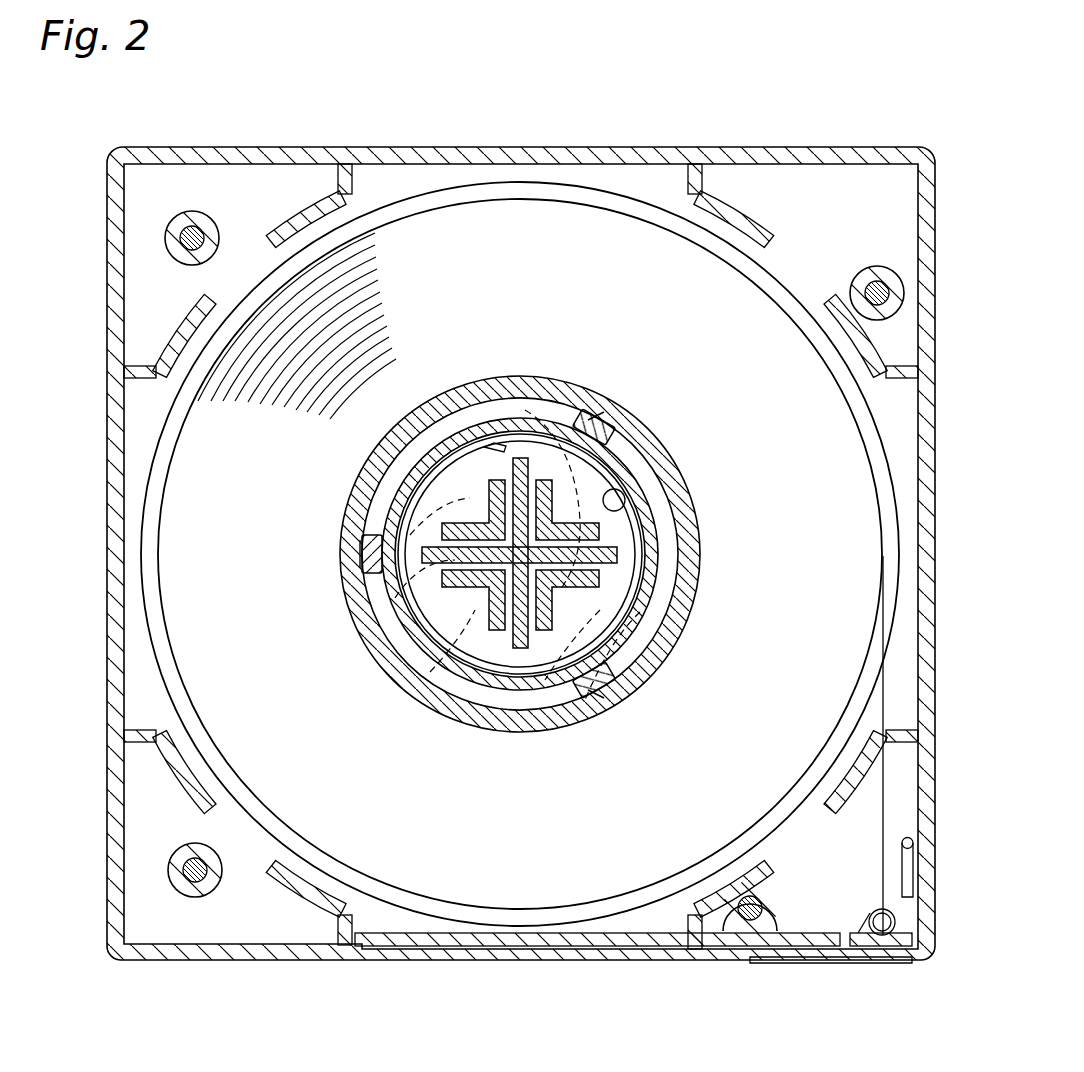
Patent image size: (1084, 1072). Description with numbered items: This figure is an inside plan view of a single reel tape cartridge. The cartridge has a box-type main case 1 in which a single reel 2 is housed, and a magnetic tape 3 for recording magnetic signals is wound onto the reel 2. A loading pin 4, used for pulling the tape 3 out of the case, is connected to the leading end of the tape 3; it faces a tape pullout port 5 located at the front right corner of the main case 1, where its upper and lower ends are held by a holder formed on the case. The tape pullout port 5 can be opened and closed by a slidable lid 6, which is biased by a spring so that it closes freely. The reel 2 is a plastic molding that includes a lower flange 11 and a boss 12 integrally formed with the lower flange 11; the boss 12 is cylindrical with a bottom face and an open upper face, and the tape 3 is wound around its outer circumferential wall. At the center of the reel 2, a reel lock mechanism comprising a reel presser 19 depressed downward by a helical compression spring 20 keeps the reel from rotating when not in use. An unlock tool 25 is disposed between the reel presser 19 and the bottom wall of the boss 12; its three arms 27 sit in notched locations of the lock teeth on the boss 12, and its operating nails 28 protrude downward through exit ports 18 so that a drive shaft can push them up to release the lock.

The main case 1 is at (757, 147).
The reel 2 is at (650, 198).
The magnetic tape 3 is at (316, 285).
The loading pin 4 is at (870, 912).
The tape pullout port 5 is at (888, 962).
The lid 6 is at (840, 960).
The lower flange 11 is at (415, 946).
The boss 12 is at (515, 736).
The exit ports 18 is at (590, 424).
The reel presser 19 is at (660, 548).
The helical compression spring 20 is at (625, 505).
The unlock tool 25 is at (474, 612).
The arms 27 is at (526, 408).
The operating nails 28 is at (614, 428).